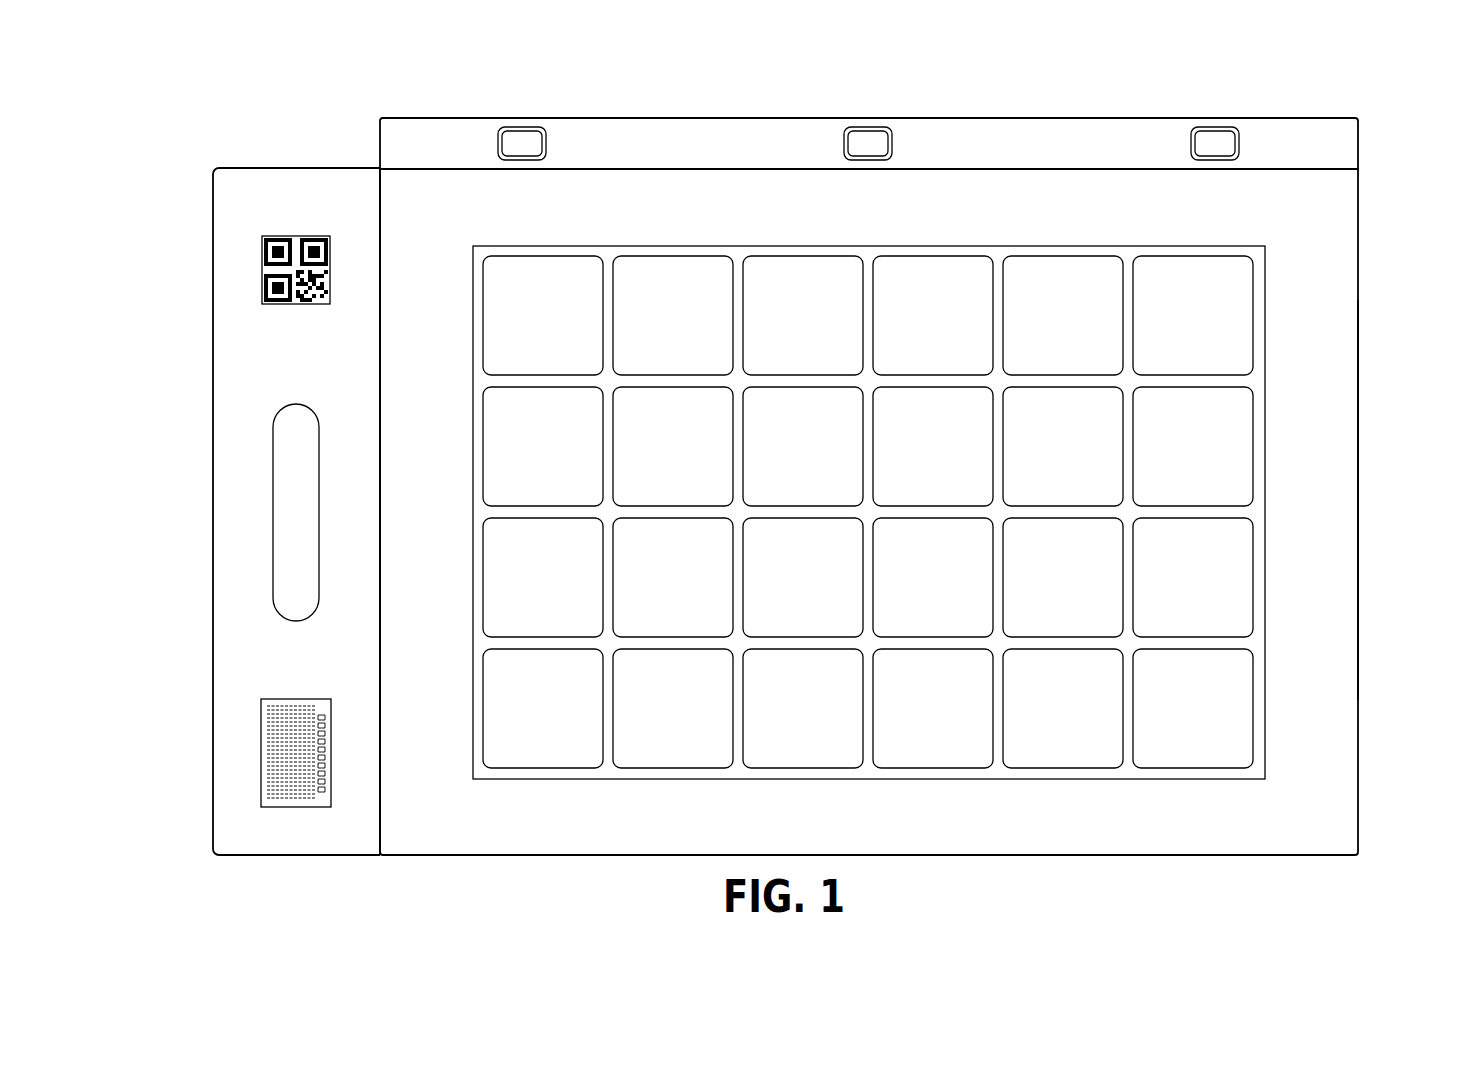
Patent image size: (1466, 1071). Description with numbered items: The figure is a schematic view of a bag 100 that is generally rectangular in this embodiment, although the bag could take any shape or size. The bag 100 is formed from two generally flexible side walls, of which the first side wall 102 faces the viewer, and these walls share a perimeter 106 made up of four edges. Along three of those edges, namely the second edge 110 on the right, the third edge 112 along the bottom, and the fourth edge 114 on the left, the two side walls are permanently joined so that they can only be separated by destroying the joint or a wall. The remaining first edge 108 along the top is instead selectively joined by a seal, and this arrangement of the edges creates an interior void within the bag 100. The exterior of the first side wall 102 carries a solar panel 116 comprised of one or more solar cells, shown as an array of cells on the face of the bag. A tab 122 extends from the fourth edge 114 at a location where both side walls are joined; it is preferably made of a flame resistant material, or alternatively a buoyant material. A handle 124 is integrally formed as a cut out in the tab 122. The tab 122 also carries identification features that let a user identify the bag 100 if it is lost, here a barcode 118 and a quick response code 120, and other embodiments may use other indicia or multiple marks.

The bag 100 is at (614, 100).
The first side wall 102 is at (1330, 213).
The perimeter 106 is at (1180, 874).
The first edge 108 is at (455, 168).
The second edge 110 is at (1358, 648).
The third edge 112 is at (1027, 856).
The fourth edge 114 is at (378, 376).
The solar panel 116 is at (934, 290).
The barcode 118 is at (261, 745).
The quick response (QR) code 120 is at (298, 235).
The tab 122 is at (213, 648).
The handle 124 is at (273, 470).